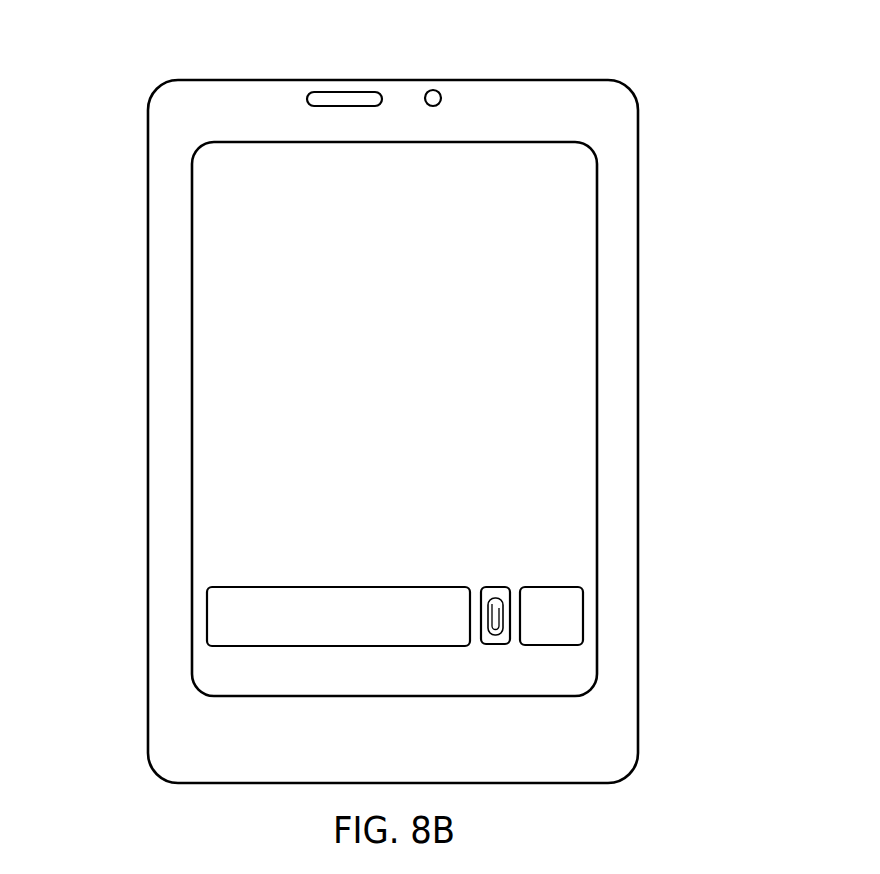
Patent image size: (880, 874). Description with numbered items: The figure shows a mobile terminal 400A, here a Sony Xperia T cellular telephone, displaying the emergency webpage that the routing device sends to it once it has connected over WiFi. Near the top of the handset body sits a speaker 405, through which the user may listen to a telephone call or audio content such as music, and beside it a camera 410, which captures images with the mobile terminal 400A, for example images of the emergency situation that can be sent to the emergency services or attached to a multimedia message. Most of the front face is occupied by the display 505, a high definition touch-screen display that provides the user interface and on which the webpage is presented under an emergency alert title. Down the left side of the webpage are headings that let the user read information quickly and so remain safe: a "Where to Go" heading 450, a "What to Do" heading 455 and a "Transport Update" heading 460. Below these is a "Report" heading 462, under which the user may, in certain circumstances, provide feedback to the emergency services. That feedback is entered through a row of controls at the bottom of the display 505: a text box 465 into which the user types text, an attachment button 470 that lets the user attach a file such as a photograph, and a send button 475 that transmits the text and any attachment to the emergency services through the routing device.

The mobile terminal 400A is at (638, 220).
The speaker 405 is at (345, 91).
The camera 410 is at (436, 89).
The display 505 is at (597, 497).
The "Where to Go" heading 450 is at (203, 250).
The "What to Do" heading 455 is at (203, 343).
The "Transport Update" heading 460 is at (215, 447).
The "Report" heading 462 is at (203, 537).
The text box 465 is at (257, 630).
The attachment button 470 is at (497, 647).
The send button 475 is at (583, 620).